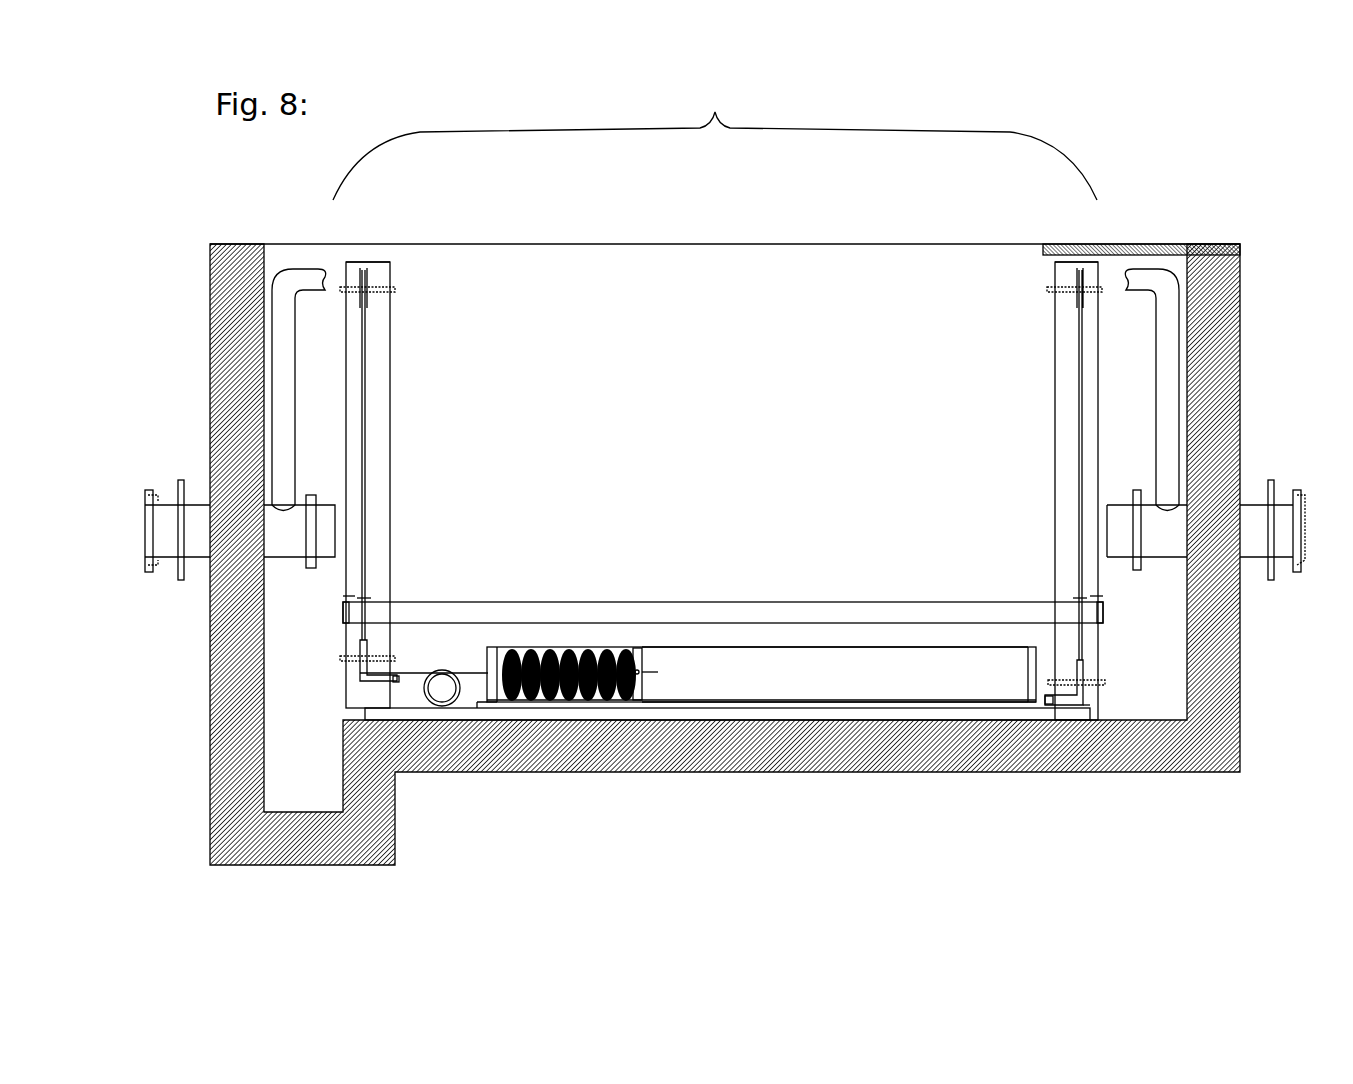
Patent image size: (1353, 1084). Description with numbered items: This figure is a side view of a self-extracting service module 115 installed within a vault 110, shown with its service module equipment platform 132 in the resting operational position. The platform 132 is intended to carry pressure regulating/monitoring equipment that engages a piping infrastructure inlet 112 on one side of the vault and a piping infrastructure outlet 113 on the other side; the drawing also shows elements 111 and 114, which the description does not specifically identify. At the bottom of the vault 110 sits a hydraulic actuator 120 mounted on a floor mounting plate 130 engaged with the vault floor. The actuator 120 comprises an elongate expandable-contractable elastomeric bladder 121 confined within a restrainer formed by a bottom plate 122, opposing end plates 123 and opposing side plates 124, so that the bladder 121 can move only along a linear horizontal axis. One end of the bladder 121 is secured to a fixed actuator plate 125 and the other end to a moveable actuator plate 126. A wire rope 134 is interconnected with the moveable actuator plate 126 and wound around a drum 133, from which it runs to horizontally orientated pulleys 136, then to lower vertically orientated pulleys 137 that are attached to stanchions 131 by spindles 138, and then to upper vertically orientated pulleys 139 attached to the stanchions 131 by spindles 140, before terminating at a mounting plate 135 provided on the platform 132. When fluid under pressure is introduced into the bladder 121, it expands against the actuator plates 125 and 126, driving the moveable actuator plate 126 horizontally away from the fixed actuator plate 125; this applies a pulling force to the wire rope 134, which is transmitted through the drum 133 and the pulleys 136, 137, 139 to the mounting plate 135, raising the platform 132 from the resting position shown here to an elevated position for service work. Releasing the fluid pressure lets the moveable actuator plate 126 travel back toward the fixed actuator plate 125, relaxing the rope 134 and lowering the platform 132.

The vault 110 is at (245, 244).
The lid 111 is at (1165, 244).
The piping infrastructure inlet 112 is at (203, 495).
The piping infrastructure outlet 113 is at (1255, 490).
The pipe 114 is at (272, 425).
The self-extracting service module 115 is at (715, 140).
The hydraulic actuator 120 is at (757, 626).
The elastomeric bladder 121 is at (580, 697).
The bottom plate 122 is at (858, 703).
The end plates 123 is at (488, 697).
The side plates 124 is at (983, 648).
The fixed actuator plate 125 is at (503, 697).
The moveable actuator plate 126 is at (643, 697).
The floor mounting plate 130 is at (1088, 705).
The stanchions 131 is at (390, 330).
The service module equipment platform 132 is at (343, 612).
The drum 133 is at (441, 706).
The wire rope 134 is at (368, 468).
The mounting plate 135 is at (350, 594).
The horizontally orientated pulleys 136 is at (396, 682).
The lower vertically orientated pulleys 137 is at (350, 668).
The spindles 138 is at (345, 657).
The upper vertically orientated pulleys 139 is at (388, 272).
The spindles 140 is at (353, 268).